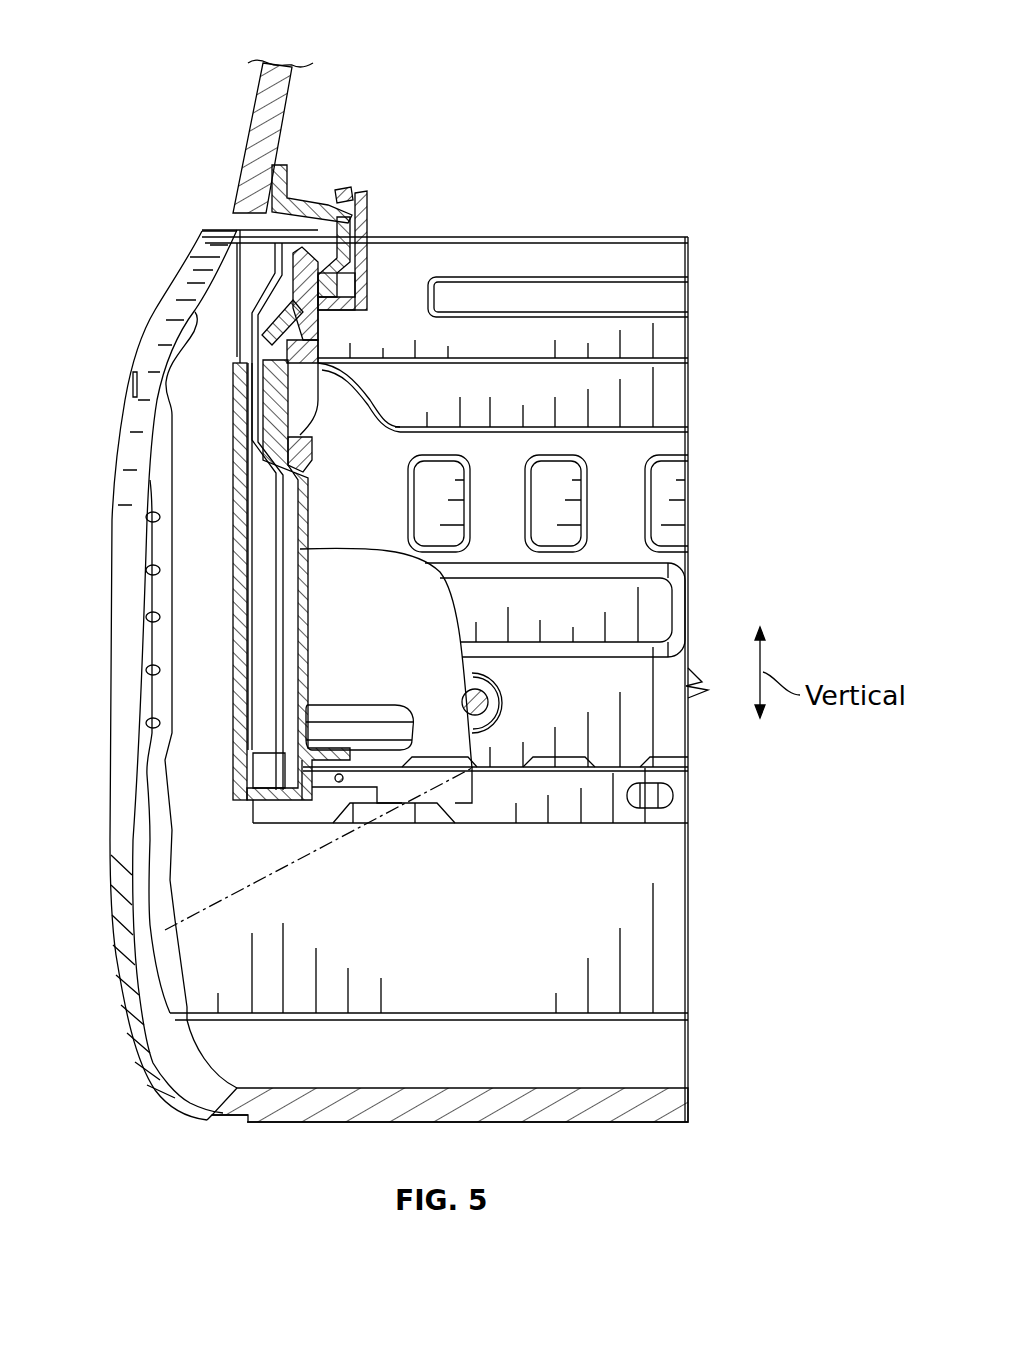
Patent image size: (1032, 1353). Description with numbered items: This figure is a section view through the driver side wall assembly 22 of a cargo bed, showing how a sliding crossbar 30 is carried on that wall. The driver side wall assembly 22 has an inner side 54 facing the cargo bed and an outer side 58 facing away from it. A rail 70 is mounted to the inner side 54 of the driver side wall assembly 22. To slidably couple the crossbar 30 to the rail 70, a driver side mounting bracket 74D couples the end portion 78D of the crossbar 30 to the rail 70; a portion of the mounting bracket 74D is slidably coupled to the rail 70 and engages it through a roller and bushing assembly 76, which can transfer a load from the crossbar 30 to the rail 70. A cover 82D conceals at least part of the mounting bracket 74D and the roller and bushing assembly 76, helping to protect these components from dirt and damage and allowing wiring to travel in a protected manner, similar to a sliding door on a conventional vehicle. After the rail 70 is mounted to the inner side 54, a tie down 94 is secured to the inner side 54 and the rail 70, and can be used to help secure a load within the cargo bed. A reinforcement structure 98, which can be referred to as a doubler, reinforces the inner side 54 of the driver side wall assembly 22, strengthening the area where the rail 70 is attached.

The end portion of the crossbar 78D is at (335, 55).
The crossbar 30 is at (288, 110).
The driver side mounting bracket 74D is at (300, 198).
The rail 70 is at (353, 333).
The cover 82D is at (370, 232).
The roller and bushing assembly 76 is at (330, 305).
The driver side wall assembly 22 is at (212, 240).
The outer side 58 is at (126, 310).
The reinforcement structure 98 is at (232, 383).
The tie down 94 is at (305, 470).
The inner side 54 is at (315, 432).